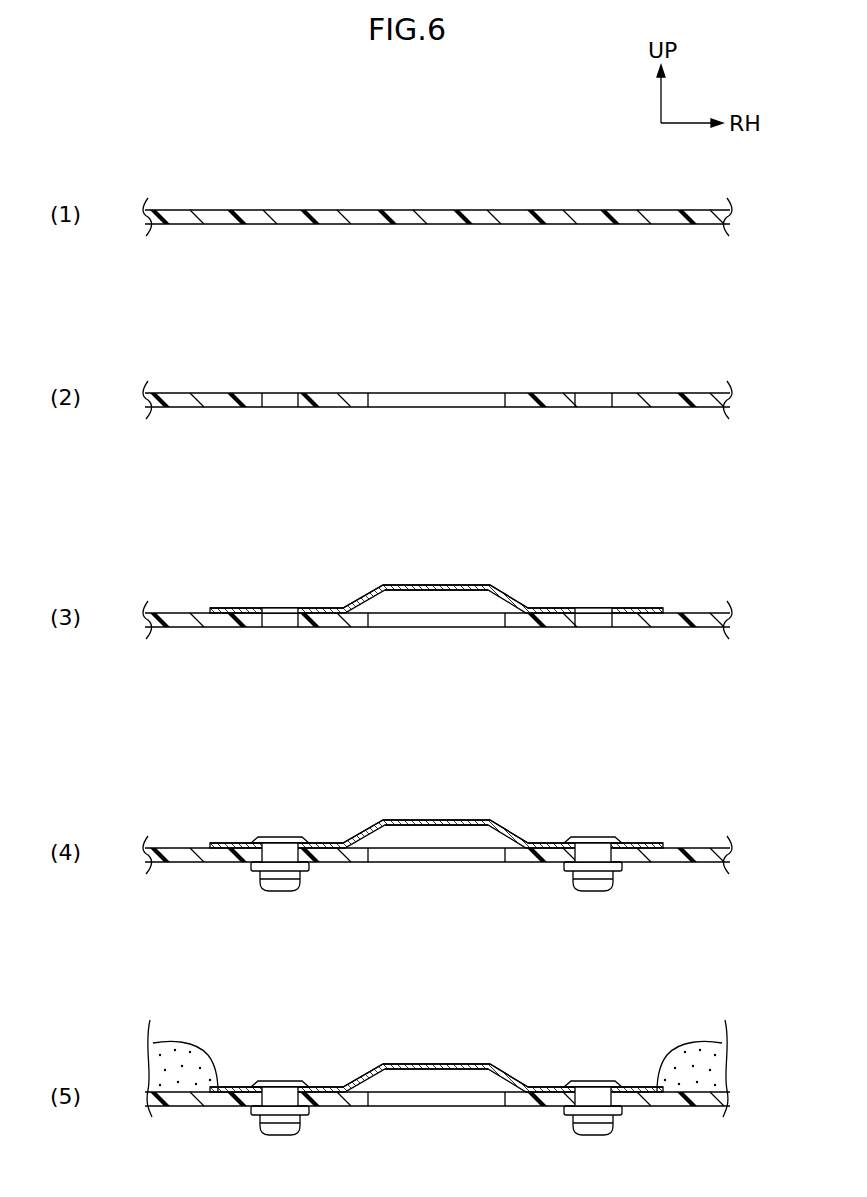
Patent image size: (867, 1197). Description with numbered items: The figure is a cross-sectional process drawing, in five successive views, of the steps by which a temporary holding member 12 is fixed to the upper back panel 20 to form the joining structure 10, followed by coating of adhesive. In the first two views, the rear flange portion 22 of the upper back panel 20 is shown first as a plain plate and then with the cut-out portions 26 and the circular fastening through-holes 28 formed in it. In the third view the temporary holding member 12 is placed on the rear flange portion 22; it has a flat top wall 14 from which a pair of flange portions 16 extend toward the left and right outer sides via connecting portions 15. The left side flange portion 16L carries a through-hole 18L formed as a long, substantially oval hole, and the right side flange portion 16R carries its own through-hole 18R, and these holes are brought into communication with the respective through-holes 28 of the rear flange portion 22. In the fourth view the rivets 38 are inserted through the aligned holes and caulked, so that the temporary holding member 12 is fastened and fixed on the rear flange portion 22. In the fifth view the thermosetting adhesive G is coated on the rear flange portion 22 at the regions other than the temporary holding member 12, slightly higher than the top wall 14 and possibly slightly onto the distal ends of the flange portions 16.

The bracket 10 is at (482, 795).
The temporary holding member 12 is at (413, 581).
The top wall 14 is at (445, 586).
The connecting portions 15 is at (363, 600).
The flange portions 16 is at (230, 845).
The left side flange portion 16L is at (230, 608).
The right flange portion 16R is at (640, 608).
The through-hole 18L is at (297, 612).
The right fastening hole 18R is at (578, 612).
The upper back panel 20 is at (405, 206).
The rear flange portion 22 is at (588, 210).
The cut-out portions 26 is at (425, 397).
The through-holes 28 is at (293, 393).
The rivets 38 is at (278, 838).
The thermosetting adhesive G is at (173, 1052).